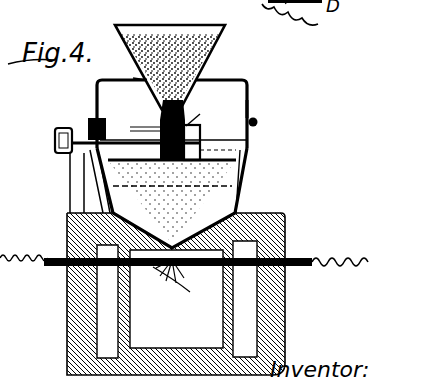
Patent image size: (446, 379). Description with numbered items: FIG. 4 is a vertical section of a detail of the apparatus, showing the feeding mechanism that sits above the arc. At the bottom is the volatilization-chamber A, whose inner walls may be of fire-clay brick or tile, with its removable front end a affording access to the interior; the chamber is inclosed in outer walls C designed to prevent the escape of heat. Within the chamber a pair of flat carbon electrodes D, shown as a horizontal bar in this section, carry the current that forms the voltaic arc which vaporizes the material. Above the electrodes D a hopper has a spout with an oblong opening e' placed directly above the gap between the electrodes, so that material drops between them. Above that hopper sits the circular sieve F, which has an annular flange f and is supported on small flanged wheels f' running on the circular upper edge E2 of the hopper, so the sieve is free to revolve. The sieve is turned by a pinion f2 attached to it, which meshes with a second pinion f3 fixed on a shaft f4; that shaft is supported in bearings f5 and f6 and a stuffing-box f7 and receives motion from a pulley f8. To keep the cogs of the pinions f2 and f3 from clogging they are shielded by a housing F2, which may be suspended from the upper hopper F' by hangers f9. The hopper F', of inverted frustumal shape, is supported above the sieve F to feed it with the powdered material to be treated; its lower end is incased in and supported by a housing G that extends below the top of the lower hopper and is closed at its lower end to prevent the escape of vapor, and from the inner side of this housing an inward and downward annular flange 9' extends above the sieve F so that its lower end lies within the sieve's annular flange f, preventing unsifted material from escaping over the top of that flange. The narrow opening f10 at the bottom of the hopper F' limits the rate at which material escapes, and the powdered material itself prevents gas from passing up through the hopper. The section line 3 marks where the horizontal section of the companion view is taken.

The outer walls C is at (270, 231).
The volatilization-chamber A is at (162, 325).
The electrodes D is at (56, 264).
The hopper F' is at (181, 67).
The housing F2 is at (231, 73).
The circular sieve F is at (188, 194).
The housing G is at (248, 98).
The hangers f9 is at (180, 40).
The opening f10 is at (133, 77).
The flanged wheels f' is at (143, 175).
The hopper outlet E' is at (168, 202).
The nozzle e is at (171, 227).
The circular upper edge E2 is at (234, 178).
The oblong opening e' is at (262, 199).
The gate 9' is at (204, 142).
The pinion f3 is at (150, 126).
The bearing f6 is at (139, 126).
The pinion f2 is at (188, 127).
The stuffing-box f7 is at (78, 124).
The shaft f4 is at (100, 127).
The pulley f8 is at (57, 138).
The bearing f5 is at (77, 168).
The section line 3 is at (55, 123).
The annular flange f is at (250, 132).
The front end a is at (67, 230).